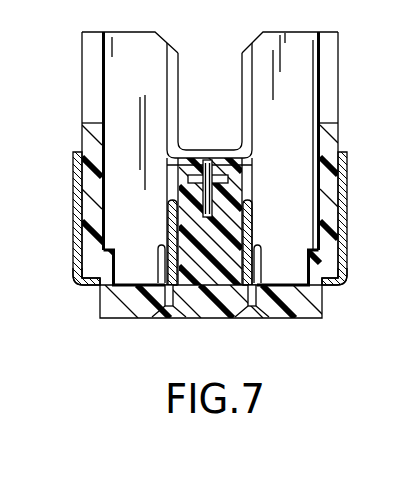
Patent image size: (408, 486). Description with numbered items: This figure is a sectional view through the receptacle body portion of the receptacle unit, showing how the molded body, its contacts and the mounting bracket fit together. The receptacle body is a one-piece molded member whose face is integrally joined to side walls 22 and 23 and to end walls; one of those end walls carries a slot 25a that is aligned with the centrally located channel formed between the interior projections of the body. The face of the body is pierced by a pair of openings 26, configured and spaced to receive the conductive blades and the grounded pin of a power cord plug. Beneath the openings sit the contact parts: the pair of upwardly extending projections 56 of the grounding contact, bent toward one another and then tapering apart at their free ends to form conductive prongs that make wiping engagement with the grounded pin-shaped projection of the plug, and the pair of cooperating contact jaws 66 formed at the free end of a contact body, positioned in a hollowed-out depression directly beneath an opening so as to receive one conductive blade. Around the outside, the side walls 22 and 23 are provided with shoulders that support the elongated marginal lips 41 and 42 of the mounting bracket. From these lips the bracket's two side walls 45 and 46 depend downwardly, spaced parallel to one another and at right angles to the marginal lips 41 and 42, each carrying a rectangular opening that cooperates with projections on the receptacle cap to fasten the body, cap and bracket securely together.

The side wall 22 is at (85, 135).
The side wall 23 is at (332, 142).
The slot 25a is at (193, 77).
The first pair of openings 26 is at (170, 315).
The marginal lip 41 is at (322, 292).
The marginal lip 42 is at (83, 287).
The side wall of mounting bracket 45 is at (346, 199).
The side wall of mounting bracket 46 is at (77, 197).
The pair of upwardly extending projections 56 is at (156, 231).
The pair of cooperating contact jaws 66 is at (260, 230).